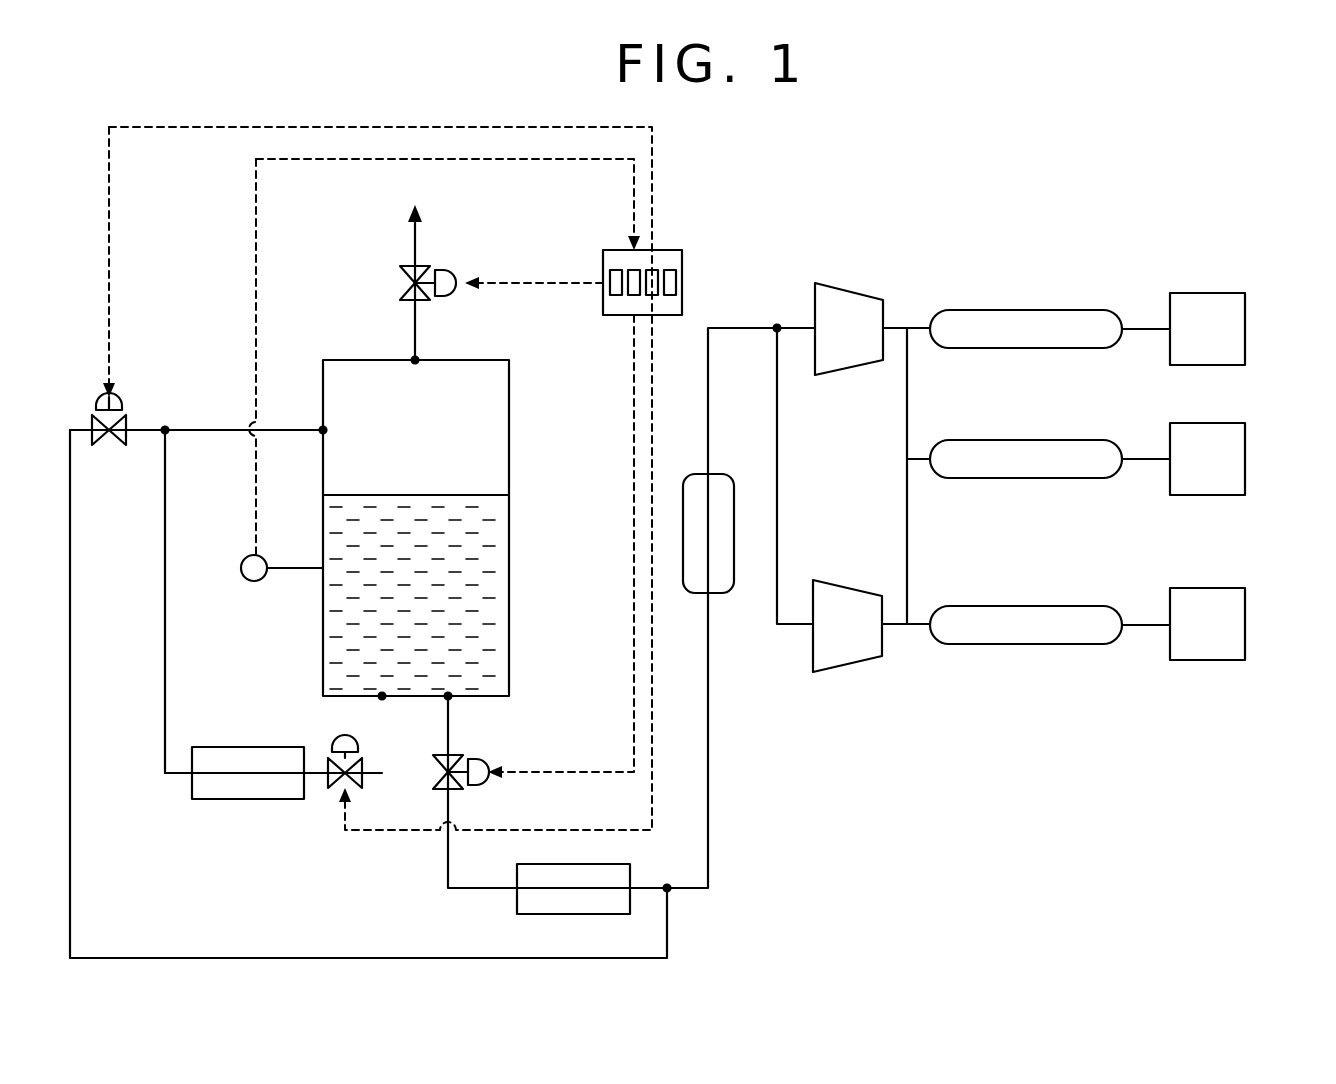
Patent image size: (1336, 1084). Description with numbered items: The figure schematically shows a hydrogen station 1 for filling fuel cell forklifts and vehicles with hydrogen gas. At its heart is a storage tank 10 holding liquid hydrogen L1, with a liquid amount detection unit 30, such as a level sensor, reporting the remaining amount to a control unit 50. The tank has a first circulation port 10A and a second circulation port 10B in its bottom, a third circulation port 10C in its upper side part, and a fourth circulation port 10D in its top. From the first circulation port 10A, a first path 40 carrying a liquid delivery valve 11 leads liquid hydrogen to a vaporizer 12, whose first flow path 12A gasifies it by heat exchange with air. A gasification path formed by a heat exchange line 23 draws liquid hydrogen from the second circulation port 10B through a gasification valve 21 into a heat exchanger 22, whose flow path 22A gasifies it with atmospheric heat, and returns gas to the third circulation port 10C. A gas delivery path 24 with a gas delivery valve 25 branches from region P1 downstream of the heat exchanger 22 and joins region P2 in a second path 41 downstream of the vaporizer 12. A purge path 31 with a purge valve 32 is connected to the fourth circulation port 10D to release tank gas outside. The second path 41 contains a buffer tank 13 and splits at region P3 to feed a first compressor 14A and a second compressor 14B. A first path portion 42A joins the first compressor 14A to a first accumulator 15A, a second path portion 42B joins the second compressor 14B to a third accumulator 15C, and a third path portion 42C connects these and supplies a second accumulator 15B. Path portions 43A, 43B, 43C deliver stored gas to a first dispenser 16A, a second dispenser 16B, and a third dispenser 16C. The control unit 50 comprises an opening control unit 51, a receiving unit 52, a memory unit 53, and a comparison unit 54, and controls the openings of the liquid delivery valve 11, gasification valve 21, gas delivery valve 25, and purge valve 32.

The hydrogen station 1 is at (1252, 210).
The storage tank 10 is at (511, 504).
The first circulation port 10A is at (450, 697).
The second circulation port 10B is at (384, 697).
The third circulation port 10C is at (322, 432).
The fourth circulation port 10D is at (416, 359).
The liquid hydrogen L1 is at (480, 583).
The liquid delivery valve 11 is at (478, 782).
The vaporizer 12 is at (532, 864).
The first flow path 12A is at (574, 889).
The buffer tank 13 is at (720, 472).
The first compressor 14A is at (820, 282).
The second compressor 14B is at (818, 582).
The first accumulator 15A is at (972, 310).
The second accumulator 15B is at (972, 440).
The third accumulator 15C is at (972, 606).
The first dispenser 16A is at (1204, 292).
The second dispenser 16B is at (1204, 422).
The third dispenser 16C is at (1204, 588).
The gasification valve 21 is at (336, 786).
The heat exchanger 22 is at (202, 746).
The flow path 22A is at (246, 776).
The heat exchange line 23 is at (164, 603).
The gas delivery path 24 is at (70, 567).
The gas delivery valve 25 is at (120, 399).
The liquid amount detection unit 30 is at (256, 582).
The purge path 31 is at (416, 238).
The purge valve 32 is at (448, 275).
The first path 40 is at (449, 724).
The second path 41 is at (690, 886).
The first path portion 42A is at (908, 324).
The second path portion 42B is at (898, 630).
The third path portion 42C is at (908, 368).
The first path portion 43A is at (1148, 324).
The second path portion 43B is at (1146, 454).
The third path portion 43C is at (1146, 620).
The control unit 50 is at (684, 264).
The opening control unit 51 is at (612, 272).
The receiving unit 52 is at (632, 270).
The memory unit 53 is at (652, 270).
The comparison unit 54 is at (670, 270).
The region P1 is at (164, 438).
The region P2 is at (668, 888).
The region P3 is at (777, 327).